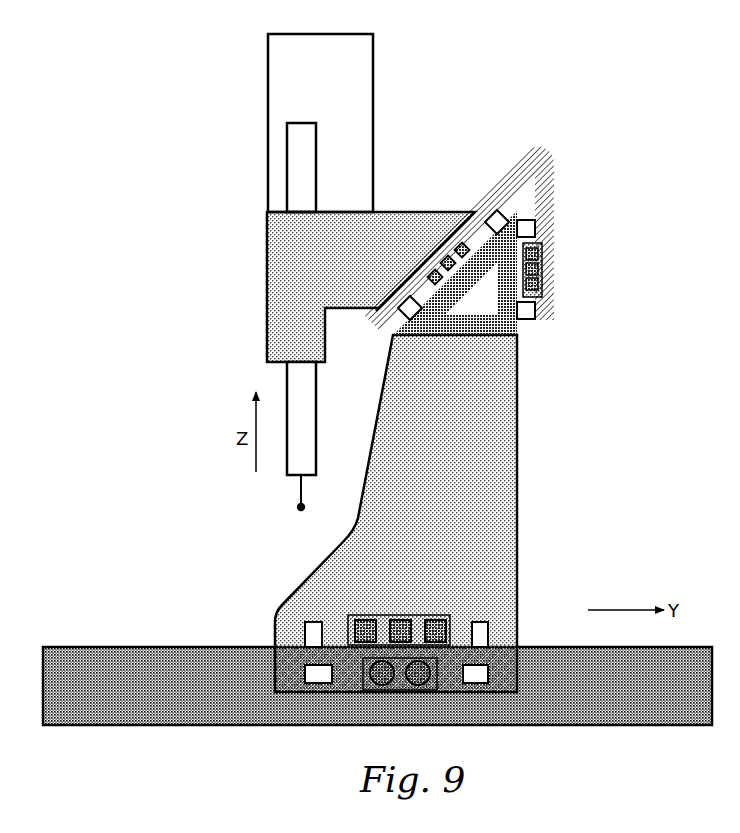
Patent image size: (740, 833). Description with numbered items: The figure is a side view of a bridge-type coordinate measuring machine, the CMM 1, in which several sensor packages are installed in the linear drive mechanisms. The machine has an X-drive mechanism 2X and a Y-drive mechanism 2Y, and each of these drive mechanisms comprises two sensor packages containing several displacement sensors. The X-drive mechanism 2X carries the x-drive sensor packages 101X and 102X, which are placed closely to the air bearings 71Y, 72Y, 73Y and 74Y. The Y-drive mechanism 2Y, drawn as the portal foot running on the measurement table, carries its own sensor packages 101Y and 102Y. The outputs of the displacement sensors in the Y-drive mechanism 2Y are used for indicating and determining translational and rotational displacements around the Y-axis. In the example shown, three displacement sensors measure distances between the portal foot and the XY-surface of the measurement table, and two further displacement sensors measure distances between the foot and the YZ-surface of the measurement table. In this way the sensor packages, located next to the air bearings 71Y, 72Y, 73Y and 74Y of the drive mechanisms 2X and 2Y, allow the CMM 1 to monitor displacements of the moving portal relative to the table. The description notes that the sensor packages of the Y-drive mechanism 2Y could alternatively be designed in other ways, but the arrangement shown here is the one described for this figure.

The bridge-type CMM 1 is at (547, 66).
The X-drive mechanism 2X is at (540, 338).
The Y-drive mechanism 2Y is at (255, 628).
The x-drive sensor package 101X is at (461, 245).
The x-drive sensor package 102X is at (535, 245).
The sensor package 101Y is at (398, 680).
The sensor package 102Y is at (417, 622).
The air bearing 71Y is at (317, 678).
The air bearing 72Y is at (315, 628).
The air bearing 73Y is at (478, 630).
The air bearing 74Y is at (485, 675).